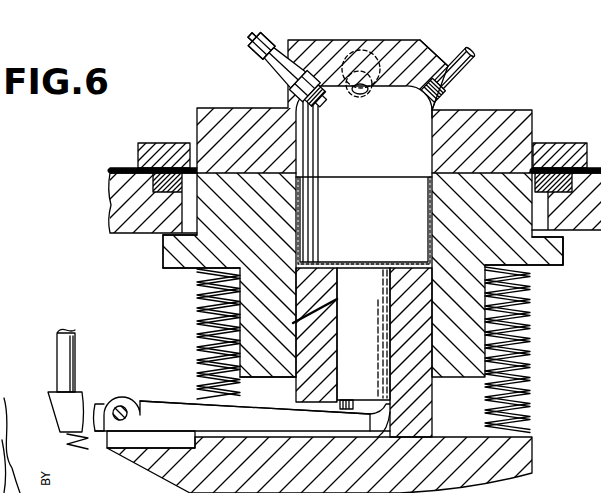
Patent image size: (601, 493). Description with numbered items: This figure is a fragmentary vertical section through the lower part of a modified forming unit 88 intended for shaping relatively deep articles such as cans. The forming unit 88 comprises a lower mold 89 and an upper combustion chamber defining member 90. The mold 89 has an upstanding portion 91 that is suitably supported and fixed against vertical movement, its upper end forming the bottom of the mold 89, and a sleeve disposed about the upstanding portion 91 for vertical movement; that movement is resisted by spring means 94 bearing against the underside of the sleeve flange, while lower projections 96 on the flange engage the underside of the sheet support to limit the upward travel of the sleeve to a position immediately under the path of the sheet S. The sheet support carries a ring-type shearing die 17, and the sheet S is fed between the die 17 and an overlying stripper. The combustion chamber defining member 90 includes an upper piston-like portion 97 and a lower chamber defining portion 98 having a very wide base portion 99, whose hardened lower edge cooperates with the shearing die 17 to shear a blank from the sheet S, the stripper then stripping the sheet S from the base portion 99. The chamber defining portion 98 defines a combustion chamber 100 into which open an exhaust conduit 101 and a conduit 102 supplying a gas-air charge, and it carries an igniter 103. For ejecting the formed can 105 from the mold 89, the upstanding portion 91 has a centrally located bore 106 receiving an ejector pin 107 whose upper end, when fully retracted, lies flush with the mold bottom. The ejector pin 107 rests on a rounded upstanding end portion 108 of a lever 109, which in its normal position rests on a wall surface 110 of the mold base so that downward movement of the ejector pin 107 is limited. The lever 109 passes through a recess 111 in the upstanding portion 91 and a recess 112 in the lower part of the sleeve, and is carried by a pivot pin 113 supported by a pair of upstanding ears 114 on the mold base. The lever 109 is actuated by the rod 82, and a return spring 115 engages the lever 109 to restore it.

The shearing die 17 is at (158, 186).
The sheet S is at (118, 170).
The rod 82 is at (68, 358).
The forming unit 88 is at (140, 270).
The lower mold 89 is at (540, 300).
The combustion chamber defining member 90 is at (478, 78).
The upstanding portion 91 is at (418, 378).
The spring means 94 is at (196, 340).
The lower projections 96 is at (171, 268).
The upper piston-like portion 97 is at (426, 45).
The lower chamber defining portion 98 is at (288, 106).
The base portion 99 is at (198, 120).
The combustion chamber 100 is at (440, 104).
The exhaust conduit 101 is at (360, 94).
The conduit 102 is at (470, 54).
The igniter 103 is at (255, 60).
The can 105 is at (393, 262).
The bore 106 is at (390, 350).
The ejector pin 107 is at (356, 332).
The rounded upstanding end portion 108 is at (393, 404).
The lever 109 is at (247, 410).
The wall surface 110 is at (272, 431).
The recess 111 is at (290, 380).
The recess 112 is at (296, 384).
The pivot pin 113 is at (124, 400).
The upstanding ears 114 is at (143, 442).
The return spring 115 is at (77, 462).